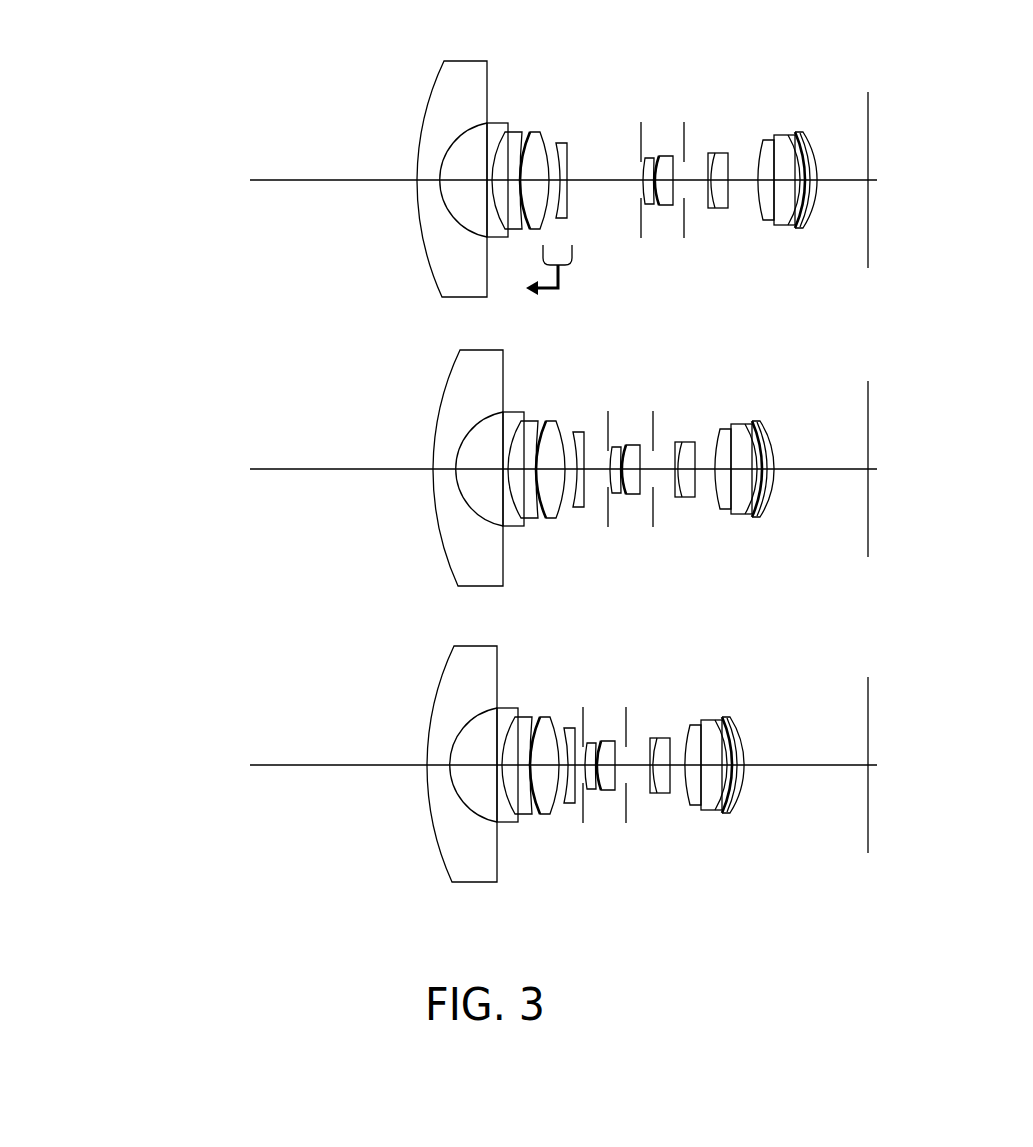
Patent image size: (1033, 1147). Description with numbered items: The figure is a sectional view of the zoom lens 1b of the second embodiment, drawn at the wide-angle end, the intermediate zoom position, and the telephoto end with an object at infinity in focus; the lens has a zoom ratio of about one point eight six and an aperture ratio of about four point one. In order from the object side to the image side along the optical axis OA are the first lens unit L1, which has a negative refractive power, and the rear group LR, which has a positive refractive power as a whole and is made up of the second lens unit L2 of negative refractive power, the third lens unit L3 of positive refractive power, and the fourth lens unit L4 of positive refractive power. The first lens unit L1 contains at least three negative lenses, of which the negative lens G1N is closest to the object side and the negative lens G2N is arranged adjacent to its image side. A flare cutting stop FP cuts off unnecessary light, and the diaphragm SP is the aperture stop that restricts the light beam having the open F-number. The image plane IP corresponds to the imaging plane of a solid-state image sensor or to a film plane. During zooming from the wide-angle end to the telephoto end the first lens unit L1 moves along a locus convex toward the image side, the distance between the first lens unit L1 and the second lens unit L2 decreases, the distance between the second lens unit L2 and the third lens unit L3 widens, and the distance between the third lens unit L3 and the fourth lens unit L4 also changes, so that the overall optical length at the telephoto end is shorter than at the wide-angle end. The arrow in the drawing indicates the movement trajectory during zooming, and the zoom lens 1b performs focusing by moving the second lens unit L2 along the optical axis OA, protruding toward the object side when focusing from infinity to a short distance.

The zoom lens 1b is at (947, 34).
The first lens unit L1 is at (540, 55).
The rear group LR is at (835, 55).
The second lens unit L2 is at (580, 95).
The third lens unit L3 is at (725, 95).
The fourth lens unit L4 is at (816, 95).
The negative lens G1N is at (443, 267).
The negative lens G2N is at (493, 227).
The flare cutting stop FP is at (641, 237).
The diaphragm SP is at (684, 237).
The image plane IP is at (868, 148).
The optical axis OA is at (563, 515).